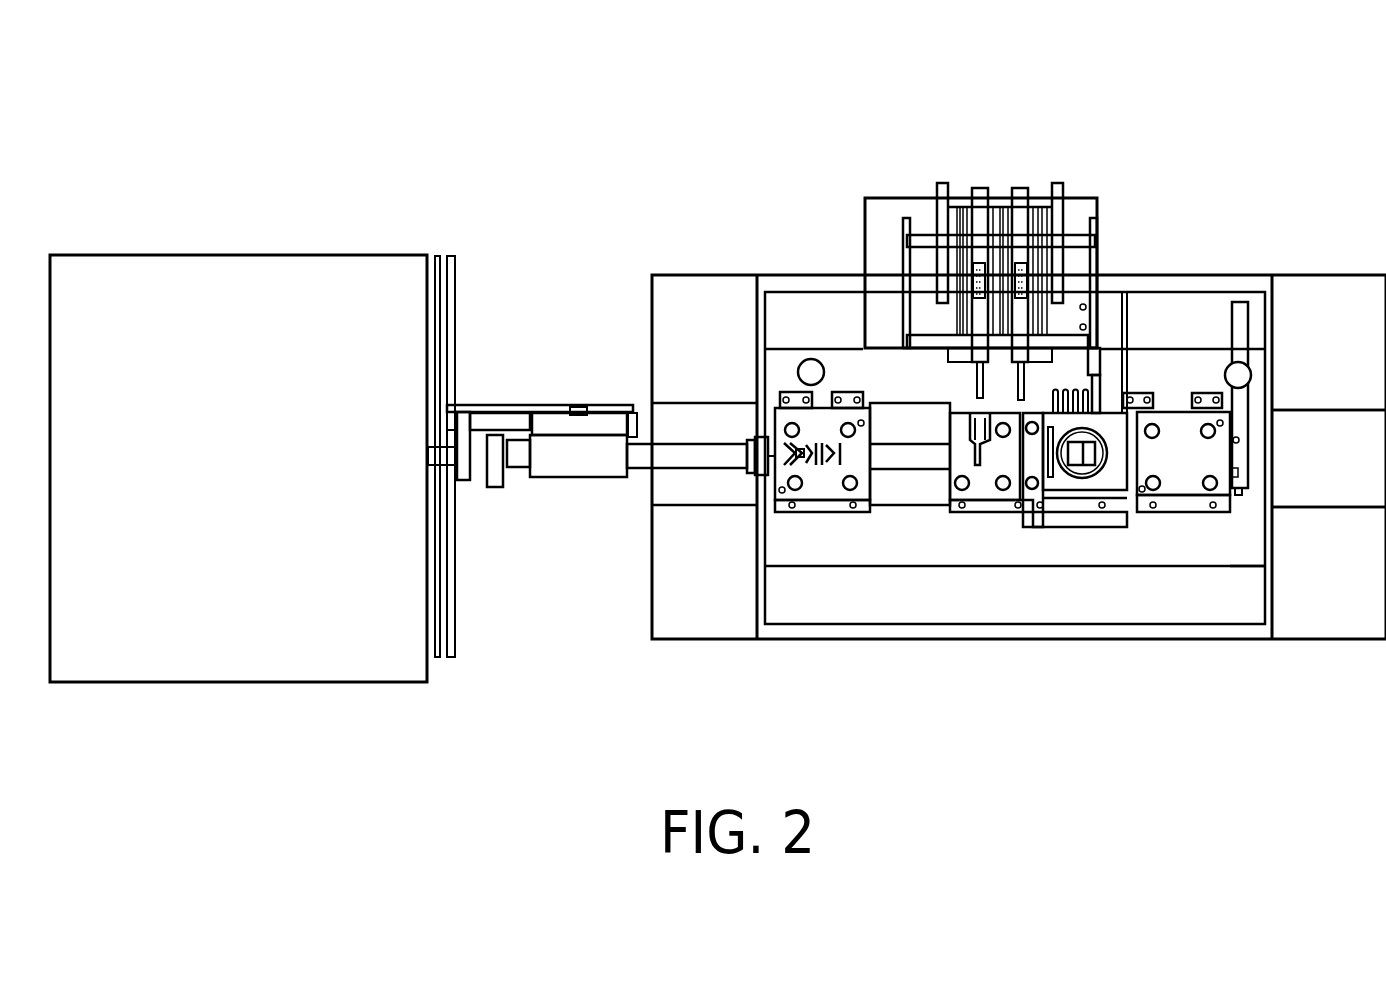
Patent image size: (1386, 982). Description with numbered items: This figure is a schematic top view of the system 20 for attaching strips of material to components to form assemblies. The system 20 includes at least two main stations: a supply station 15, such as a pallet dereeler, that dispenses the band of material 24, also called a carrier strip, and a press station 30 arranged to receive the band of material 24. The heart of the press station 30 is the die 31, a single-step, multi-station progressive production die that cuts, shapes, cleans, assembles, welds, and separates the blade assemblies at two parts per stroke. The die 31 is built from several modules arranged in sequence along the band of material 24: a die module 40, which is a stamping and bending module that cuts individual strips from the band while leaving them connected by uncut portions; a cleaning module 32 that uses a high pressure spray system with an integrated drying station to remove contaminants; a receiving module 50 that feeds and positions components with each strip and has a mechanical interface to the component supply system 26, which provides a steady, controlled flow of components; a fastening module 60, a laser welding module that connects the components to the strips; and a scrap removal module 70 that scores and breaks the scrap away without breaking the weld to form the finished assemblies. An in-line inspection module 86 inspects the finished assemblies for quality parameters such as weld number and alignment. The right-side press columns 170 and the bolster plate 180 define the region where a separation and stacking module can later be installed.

The supply station 15 is at (273, 650).
The system 20 is at (534, 97).
The band of material 24 is at (640, 437).
The component supply system 26 is at (982, 187).
The press station 30 is at (1052, 603).
The die 31 is at (1177, 520).
The cleaning module 32 is at (900, 492).
The die module 40 is at (818, 485).
The receiving module 50 is at (985, 480).
The fastening module 60 is at (1092, 518).
The scrap removal module 70 is at (1177, 430).
The in-line inspection module 86 is at (1243, 302).
The right-side press columns 170 is at (1312, 303).
The bolster plate 180 is at (1230, 568).